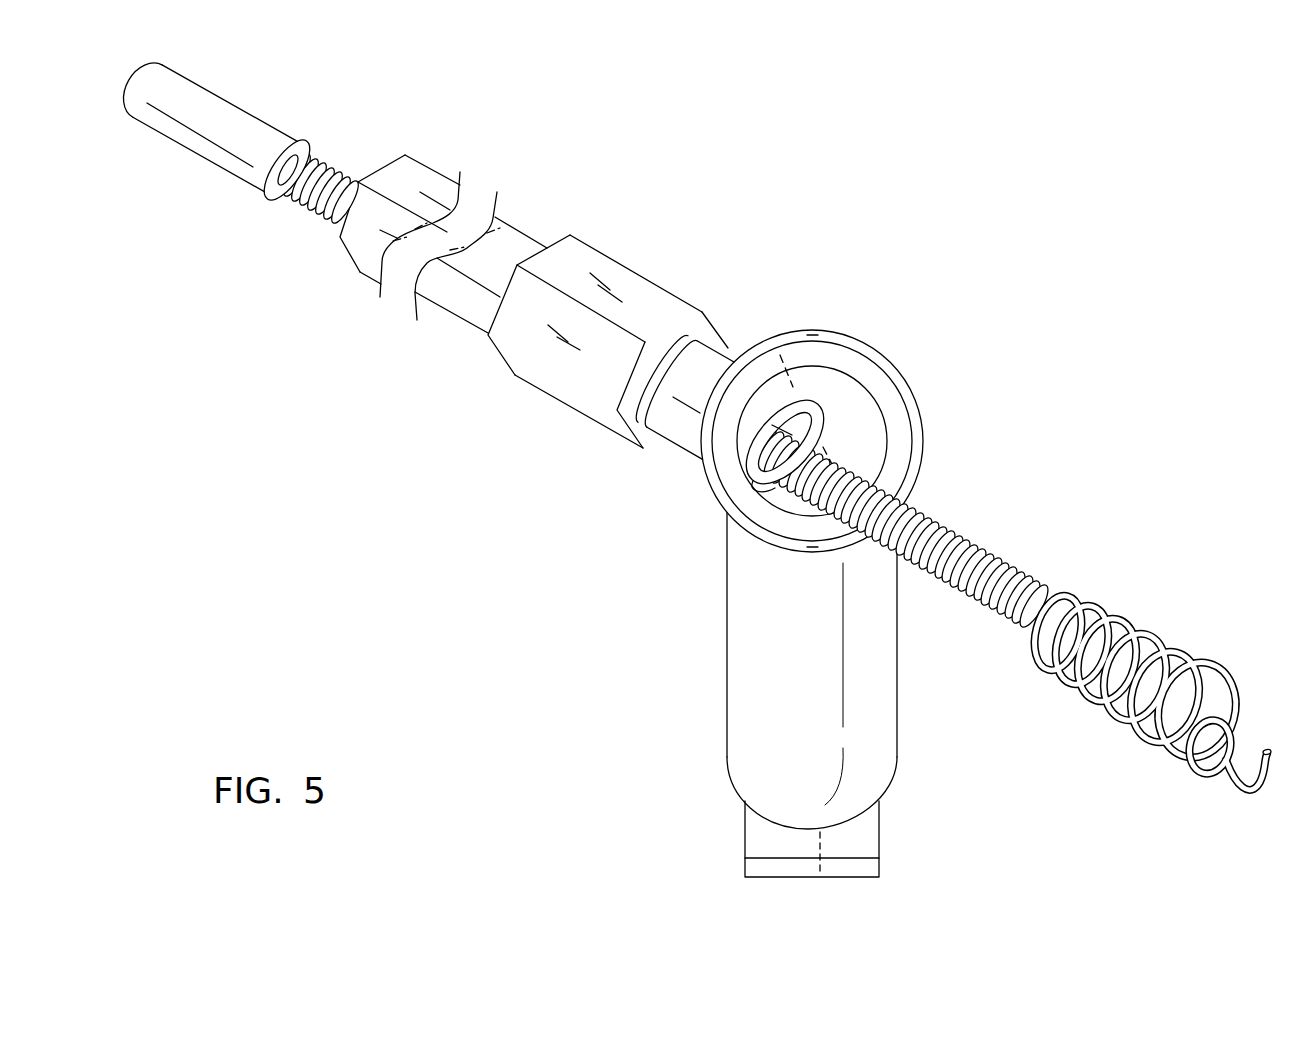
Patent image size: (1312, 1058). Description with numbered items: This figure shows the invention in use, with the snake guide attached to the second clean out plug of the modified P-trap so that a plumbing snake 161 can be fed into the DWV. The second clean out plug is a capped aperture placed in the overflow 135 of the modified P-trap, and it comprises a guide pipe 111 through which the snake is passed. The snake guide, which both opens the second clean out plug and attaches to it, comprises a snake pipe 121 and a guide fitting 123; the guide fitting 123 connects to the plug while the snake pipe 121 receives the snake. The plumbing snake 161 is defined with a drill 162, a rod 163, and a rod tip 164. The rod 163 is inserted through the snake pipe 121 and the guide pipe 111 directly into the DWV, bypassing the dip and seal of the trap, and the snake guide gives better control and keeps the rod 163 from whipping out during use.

The guide pipe 111 is at (710, 368).
The snake pipe 121 is at (510, 250).
The guide fitting 123 is at (627, 283).
The overflow 135 is at (895, 422).
The plumbing snake 161 is at (1070, 597).
The drill 162 is at (233, 112).
The rod 163 is at (940, 540).
The rod tip 164 is at (1155, 647).